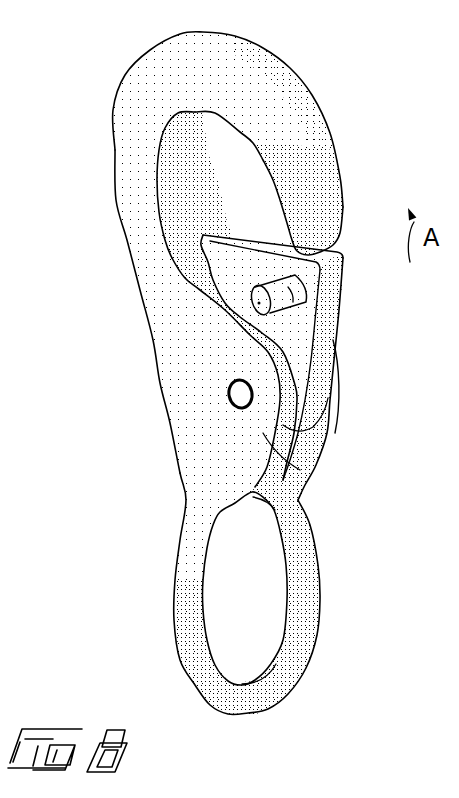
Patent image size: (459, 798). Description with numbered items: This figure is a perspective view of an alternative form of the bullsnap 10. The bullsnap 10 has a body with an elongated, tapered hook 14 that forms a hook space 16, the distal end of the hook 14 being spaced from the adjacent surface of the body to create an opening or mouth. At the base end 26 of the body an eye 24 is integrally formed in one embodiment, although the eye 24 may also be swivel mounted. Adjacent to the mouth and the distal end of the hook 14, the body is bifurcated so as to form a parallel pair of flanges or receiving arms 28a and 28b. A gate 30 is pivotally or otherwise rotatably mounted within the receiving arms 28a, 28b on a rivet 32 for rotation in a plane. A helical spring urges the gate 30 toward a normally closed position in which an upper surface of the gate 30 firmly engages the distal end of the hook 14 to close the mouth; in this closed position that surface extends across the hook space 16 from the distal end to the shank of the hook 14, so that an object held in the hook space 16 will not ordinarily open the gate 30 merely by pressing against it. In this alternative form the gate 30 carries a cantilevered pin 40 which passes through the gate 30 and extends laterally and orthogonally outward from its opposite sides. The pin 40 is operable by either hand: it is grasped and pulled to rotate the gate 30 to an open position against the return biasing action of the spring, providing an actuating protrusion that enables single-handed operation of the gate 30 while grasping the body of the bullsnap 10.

The bullsnap 10 is at (118, 300).
The hook 14 is at (300, 135).
The hook space 16 is at (243, 148).
The eye 24 is at (190, 620).
The base end 26 is at (210, 446).
The receiving arm 28a is at (300, 470).
The receiving arm 28b is at (338, 399).
The gate 30 is at (320, 332).
The rivet 32 is at (237, 397).
The cantilevered pin 40 is at (300, 300).